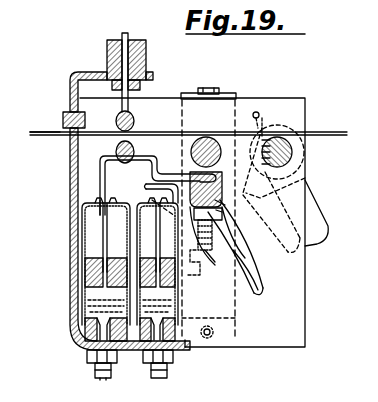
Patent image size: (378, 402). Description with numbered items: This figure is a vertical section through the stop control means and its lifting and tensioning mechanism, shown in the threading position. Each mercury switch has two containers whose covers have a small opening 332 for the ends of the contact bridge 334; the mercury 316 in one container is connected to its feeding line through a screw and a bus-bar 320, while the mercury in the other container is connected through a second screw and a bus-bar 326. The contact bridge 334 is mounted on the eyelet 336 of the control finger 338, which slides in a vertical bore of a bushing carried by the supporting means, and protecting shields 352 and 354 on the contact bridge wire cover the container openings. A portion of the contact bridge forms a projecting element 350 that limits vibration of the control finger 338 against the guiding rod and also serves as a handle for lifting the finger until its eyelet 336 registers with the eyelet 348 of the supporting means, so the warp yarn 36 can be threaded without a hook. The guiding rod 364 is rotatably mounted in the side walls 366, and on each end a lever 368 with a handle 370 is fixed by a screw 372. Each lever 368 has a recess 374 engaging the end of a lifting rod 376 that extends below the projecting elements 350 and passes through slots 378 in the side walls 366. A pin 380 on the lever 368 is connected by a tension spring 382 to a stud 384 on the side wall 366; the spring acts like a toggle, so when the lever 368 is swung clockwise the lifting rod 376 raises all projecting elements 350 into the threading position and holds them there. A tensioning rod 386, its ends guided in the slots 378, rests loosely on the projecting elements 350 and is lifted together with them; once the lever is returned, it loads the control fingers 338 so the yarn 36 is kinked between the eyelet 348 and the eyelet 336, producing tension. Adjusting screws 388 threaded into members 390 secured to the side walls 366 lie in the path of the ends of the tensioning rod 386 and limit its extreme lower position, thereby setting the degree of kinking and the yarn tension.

The warp yarn 36 is at (46, 137).
The mercury 316 is at (88, 306).
The bus-bar 320 is at (88, 356).
The bus-bar 326 is at (178, 352).
The small opening 332 is at (170, 296).
The contact bridge 334 is at (174, 166).
The eyelet 336 is at (118, 99).
The control finger 338 is at (120, 92).
The eyelet 348 is at (63, 117).
The projecting element 350 is at (154, 200).
The protecting shield 352 is at (72, 215).
The protecting shield 354 is at (102, 194).
The guiding rod 364 is at (294, 151).
The side wall 366 is at (293, 276).
The lever 368 is at (236, 252).
The handle 370 is at (322, 224).
The screw 372 is at (306, 130).
The recess 374 is at (224, 200).
The lifting rod 376 is at (218, 208).
The slot 378 is at (258, 254).
The pin 380 is at (307, 178).
The tension spring 382 is at (264, 124).
The stud 384 is at (257, 110).
The tensioning rod 386 is at (202, 138).
The adjusting screw 388 is at (207, 255).
The member 390 is at (235, 314).